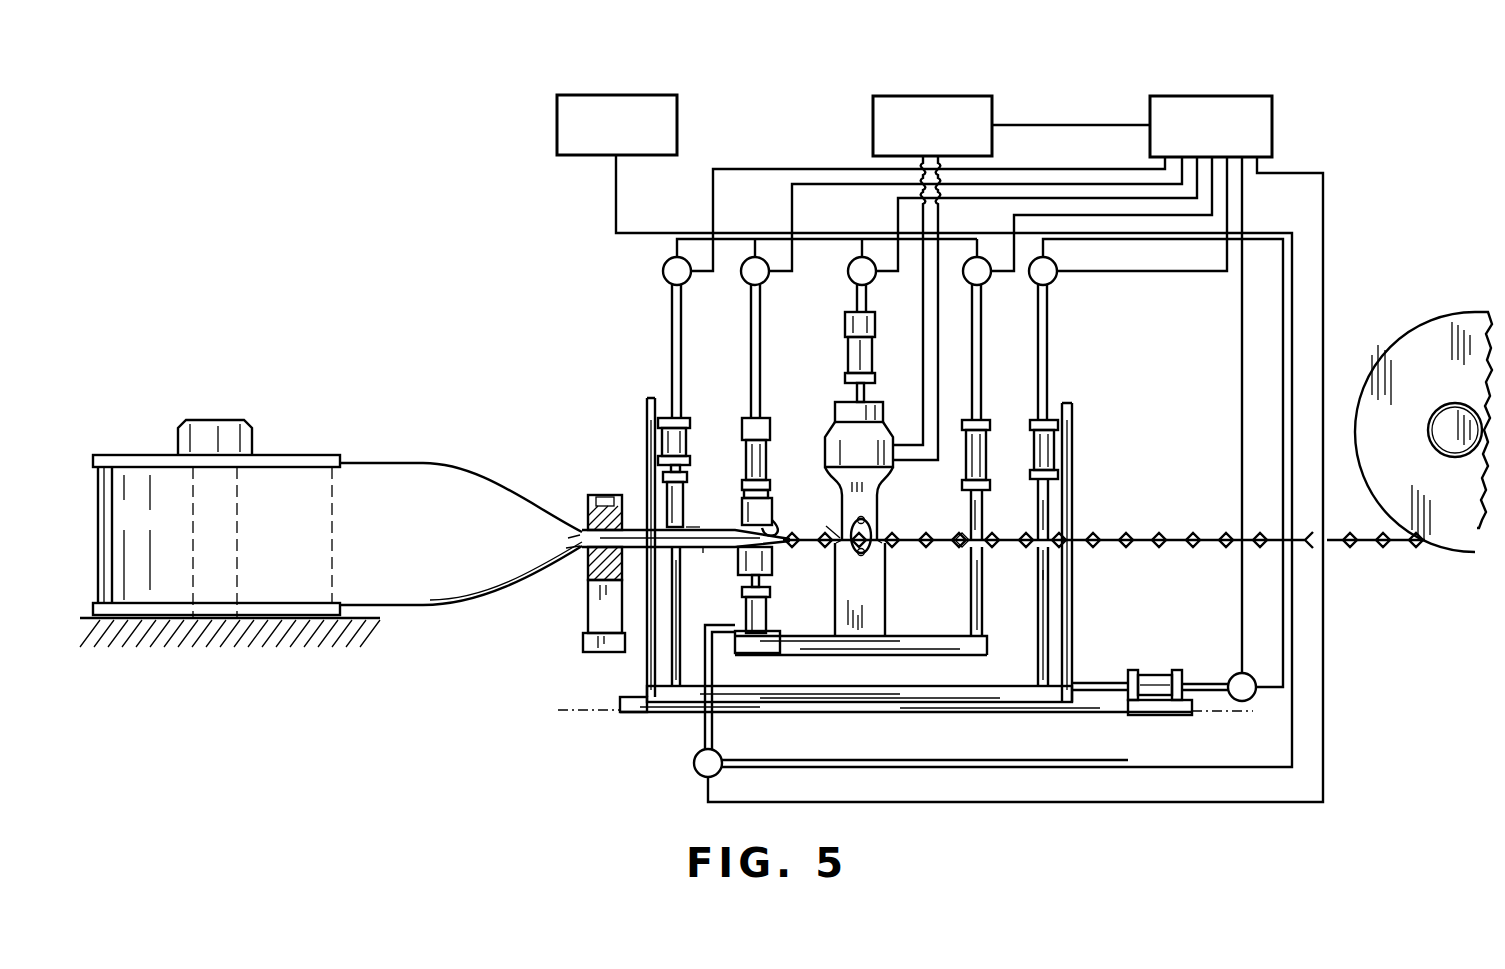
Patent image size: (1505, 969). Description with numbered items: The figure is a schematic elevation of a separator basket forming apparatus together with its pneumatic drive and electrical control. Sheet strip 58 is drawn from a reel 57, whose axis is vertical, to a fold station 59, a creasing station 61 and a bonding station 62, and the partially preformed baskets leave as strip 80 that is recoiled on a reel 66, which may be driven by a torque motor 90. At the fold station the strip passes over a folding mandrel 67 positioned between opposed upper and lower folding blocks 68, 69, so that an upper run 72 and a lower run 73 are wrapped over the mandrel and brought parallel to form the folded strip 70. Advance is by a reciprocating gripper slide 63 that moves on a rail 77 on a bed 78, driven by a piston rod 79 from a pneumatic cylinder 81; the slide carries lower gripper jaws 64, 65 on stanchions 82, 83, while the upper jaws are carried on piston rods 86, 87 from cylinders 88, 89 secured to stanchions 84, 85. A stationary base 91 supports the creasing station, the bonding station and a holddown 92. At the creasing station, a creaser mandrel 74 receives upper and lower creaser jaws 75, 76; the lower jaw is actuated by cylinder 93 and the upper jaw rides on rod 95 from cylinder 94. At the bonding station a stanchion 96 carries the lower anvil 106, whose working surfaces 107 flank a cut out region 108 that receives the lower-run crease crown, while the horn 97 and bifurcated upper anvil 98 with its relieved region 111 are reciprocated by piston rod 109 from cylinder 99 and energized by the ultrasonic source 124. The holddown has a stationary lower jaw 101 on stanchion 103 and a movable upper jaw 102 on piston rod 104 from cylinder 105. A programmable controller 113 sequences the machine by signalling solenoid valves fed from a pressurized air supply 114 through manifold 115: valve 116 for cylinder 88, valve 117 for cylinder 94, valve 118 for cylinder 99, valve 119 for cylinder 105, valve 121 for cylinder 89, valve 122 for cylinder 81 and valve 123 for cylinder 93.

The reel 57 is at (280, 455).
The separator sheet strip 58 is at (373, 483).
The fold station 59 is at (598, 495).
The creasing station 61 is at (742, 505).
The bonding station 62 is at (832, 528).
The gripper slide 63 is at (905, 686).
The gripper jaws 64 is at (670, 548).
The gripper jaws 65 is at (1038, 532).
The reel 66 is at (1421, 325).
The folding mandrel 67 is at (570, 551).
The upper folding block 68 is at (582, 530).
The lower folding block 69 is at (600, 567).
The folded strip 70 is at (647, 500).
The upper run 72 is at (692, 527).
The lower run 73 is at (706, 553).
The creaser mandrel 74 is at (743, 565).
The upper creaser jaw 75 is at (775, 522).
The lower creaser jaw 76 is at (770, 579).
The rail 77 is at (620, 697).
The bed 78 is at (630, 713).
The piston rod 79 is at (1090, 684).
The strip 80 is at (912, 534).
The pneumatic cylinder 81 is at (1157, 670).
The stanchion 82 is at (683, 623).
The stanchion 83 is at (1040, 604).
The stanchion 84 is at (645, 650).
The stanchion 85 is at (1073, 612).
The piston rod 86 is at (682, 483).
The piston rod 87 is at (1050, 476).
The cylinder 88 is at (682, 427).
The cylinder 89 is at (1058, 440).
The torque motor 90 is at (1428, 427).
The stationary base 91 is at (810, 653).
The holddown 92 is at (960, 530).
The lower jaw actuating cylinder 93 is at (779, 640).
The upper jaw actuating cylinder 94 is at (764, 433).
The rod 95 is at (766, 498).
The stanchion 96 is at (887, 625).
The horn 97 is at (883, 440).
The upper anvil 98 is at (882, 505).
The cylinder 99 is at (845, 345).
The stationary lower jaw 101 is at (972, 553).
The movable upper jaw 102 is at (984, 516).
The stanchion 103 is at (1040, 585).
The piston rod 104 is at (983, 490).
The cylinder 105 is at (968, 428).
The anvil 106 is at (878, 566).
The working surfaces 107 is at (836, 547).
The cut out region 108 is at (861, 560).
The piston rod 109 is at (868, 383).
The relieved region 111 is at (860, 519).
The programmable controller 113 is at (1171, 134).
The supply of pressurized air 114 is at (581, 134).
The manifold 115 is at (820, 232).
The pneumatic valve 116 is at (663, 271).
The pneumatic valve 117 is at (745, 281).
The pneumatic valve 118 is at (848, 272).
The pneumatic valve 119 is at (987, 282).
The pneumatic valve 121 is at (1055, 280).
The pneumatic valve 122 is at (1238, 675).
The pneumatic valve 123 is at (697, 770).
The ultrasonic energy source 124 is at (886, 134).